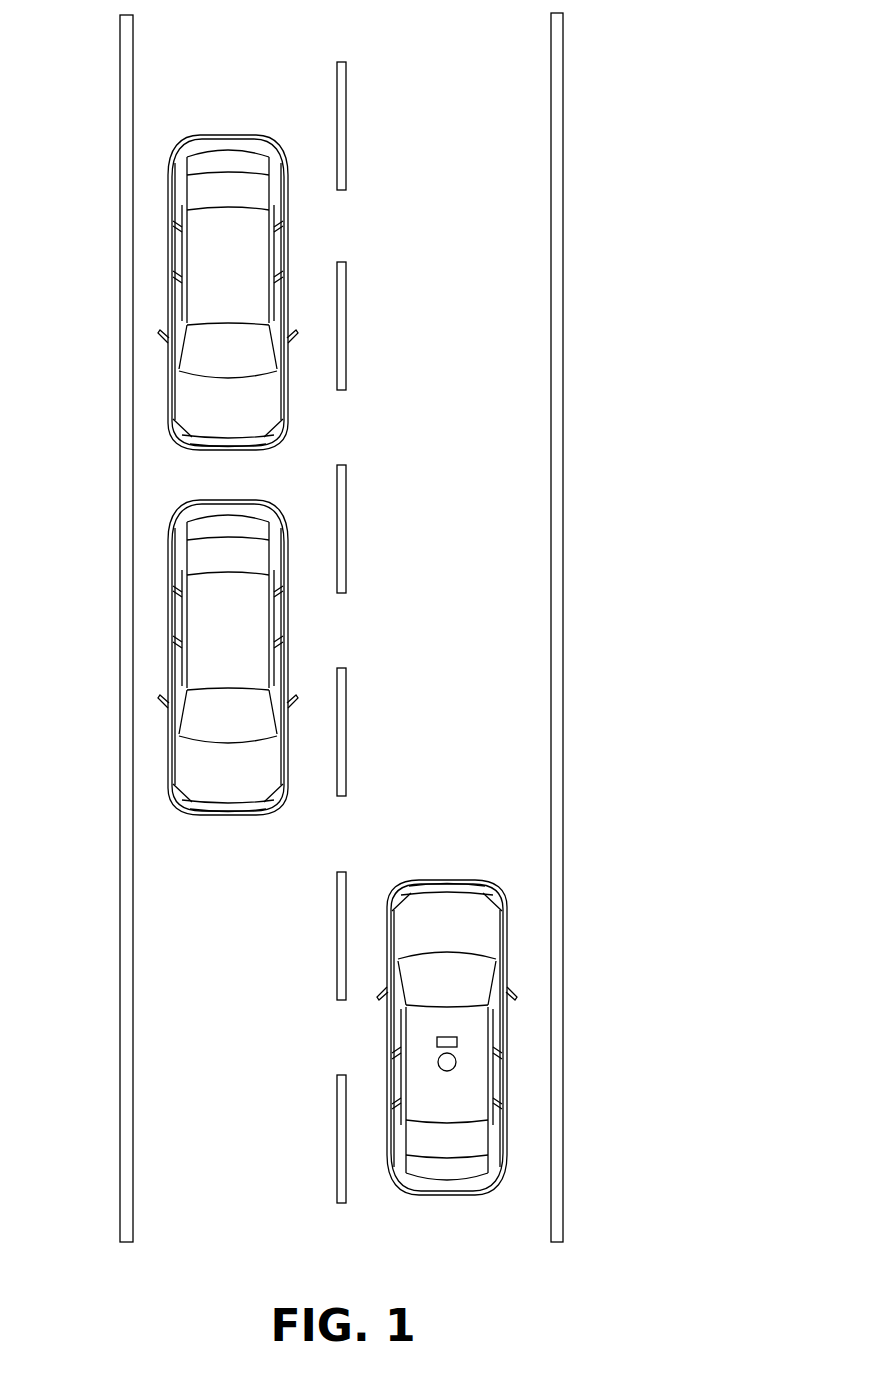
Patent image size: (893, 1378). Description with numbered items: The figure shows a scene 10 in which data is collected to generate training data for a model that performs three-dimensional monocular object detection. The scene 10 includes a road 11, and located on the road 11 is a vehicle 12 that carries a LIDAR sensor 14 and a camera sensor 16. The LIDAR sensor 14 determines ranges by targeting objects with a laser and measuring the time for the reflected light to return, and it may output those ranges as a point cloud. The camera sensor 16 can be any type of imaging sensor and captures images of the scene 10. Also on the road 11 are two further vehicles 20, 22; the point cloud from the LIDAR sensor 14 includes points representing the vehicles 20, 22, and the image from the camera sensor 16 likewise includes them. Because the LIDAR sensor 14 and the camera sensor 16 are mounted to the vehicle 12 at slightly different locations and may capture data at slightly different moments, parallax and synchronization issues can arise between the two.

The scene 10 is at (436, 627).
The road 11 is at (415, 466).
The vehicle 12 is at (485, 933).
The LIDAR sensor 14 is at (457, 1063).
The camera sensor 16 is at (458, 1043).
The vehicle 20 is at (210, 621).
The vehicle 22 is at (210, 264).